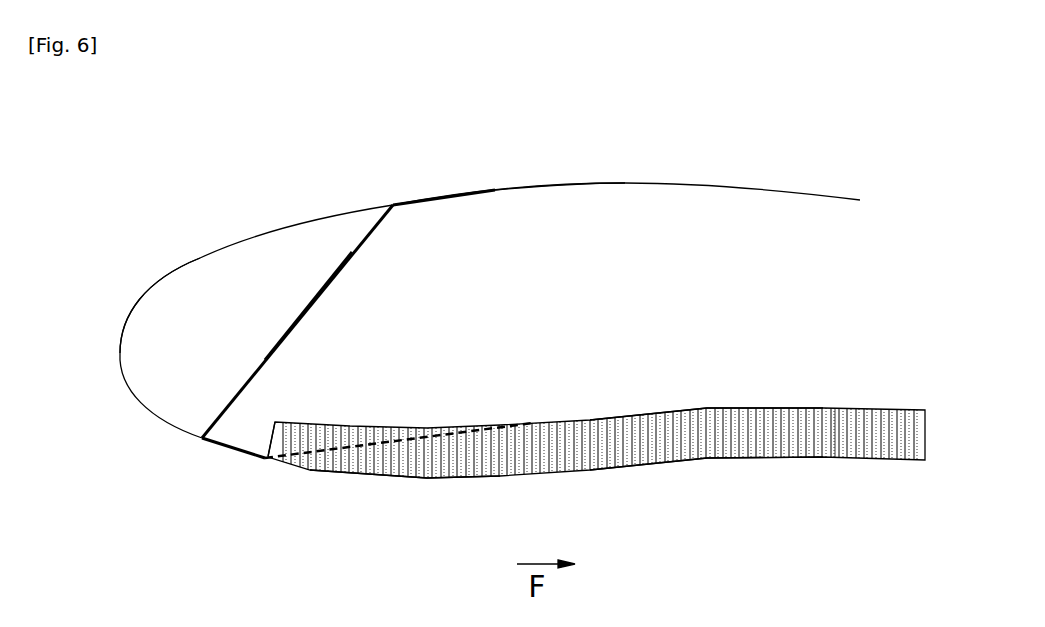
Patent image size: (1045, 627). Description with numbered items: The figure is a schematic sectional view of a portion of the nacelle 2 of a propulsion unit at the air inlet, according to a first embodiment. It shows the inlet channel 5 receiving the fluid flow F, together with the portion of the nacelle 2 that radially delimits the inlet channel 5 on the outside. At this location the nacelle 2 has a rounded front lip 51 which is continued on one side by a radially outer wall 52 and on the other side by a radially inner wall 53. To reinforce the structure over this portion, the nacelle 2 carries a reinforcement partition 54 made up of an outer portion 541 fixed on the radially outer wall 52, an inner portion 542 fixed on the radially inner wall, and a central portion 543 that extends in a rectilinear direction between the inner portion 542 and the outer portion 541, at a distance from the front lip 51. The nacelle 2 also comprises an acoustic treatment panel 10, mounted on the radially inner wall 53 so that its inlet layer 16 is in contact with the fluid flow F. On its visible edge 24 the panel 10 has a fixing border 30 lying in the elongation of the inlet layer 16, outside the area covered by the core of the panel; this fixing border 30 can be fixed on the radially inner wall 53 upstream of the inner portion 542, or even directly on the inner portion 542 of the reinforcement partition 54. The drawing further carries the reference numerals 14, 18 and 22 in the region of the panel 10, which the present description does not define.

The nacelle 2 is at (808, 193).
The inlet channel 5 is at (232, 582).
The acoustic treatment panel 10 is at (897, 409).
The upper surface of wall 14 is at (664, 410).
The inlet layer 16 is at (754, 458).
The wall thickness 18 is at (835, 421).
The interface line 22 is at (363, 443).
The edge 24 is at (263, 438).
The fixing border 30 is at (250, 456).
The front lip 51 is at (147, 300).
The radially outer wall 52 is at (625, 183).
The radially inner wall 53 is at (428, 478).
The reinforcement partition 54 is at (352, 252).
The outer portion 541 is at (442, 196).
The inner portion 542 is at (217, 448).
The central portion 543 is at (307, 307).